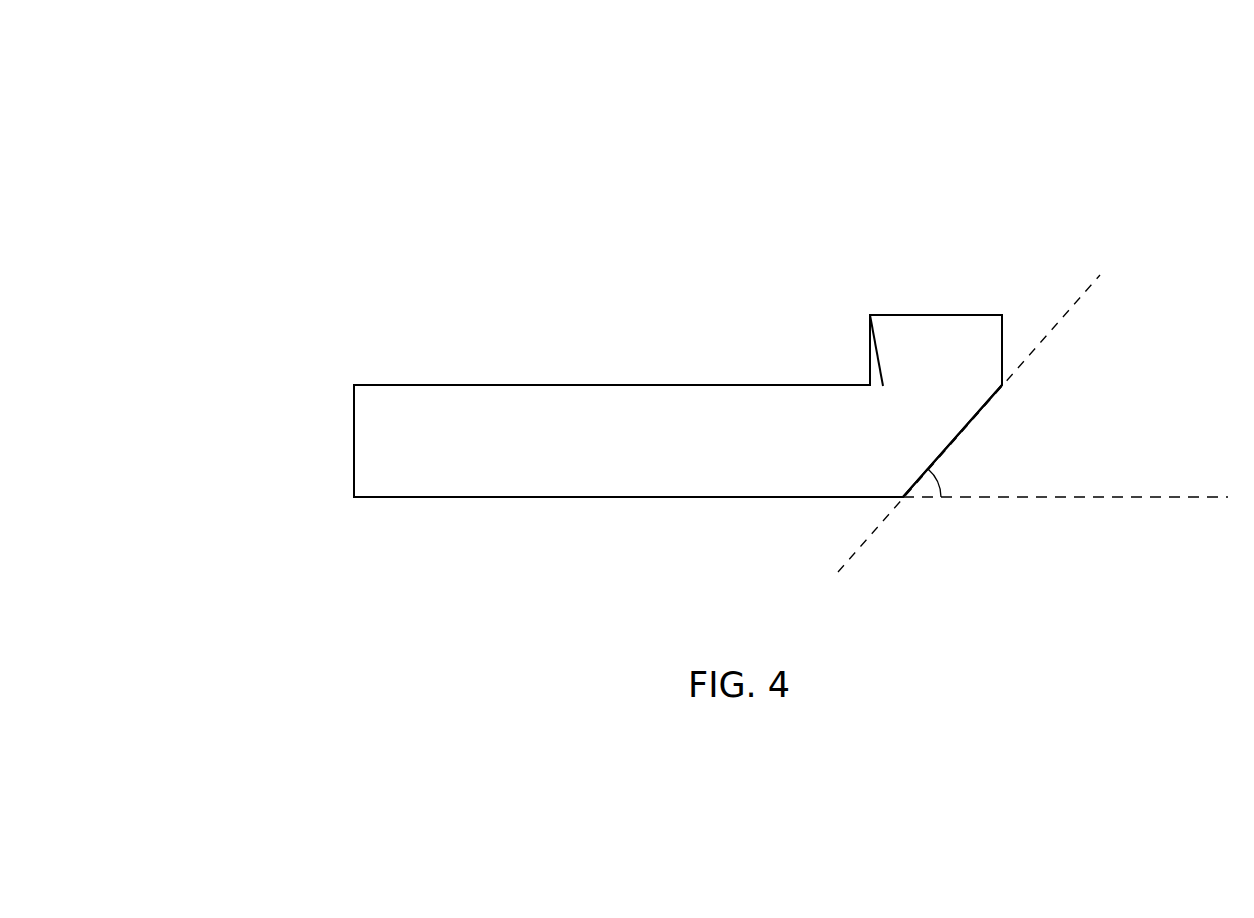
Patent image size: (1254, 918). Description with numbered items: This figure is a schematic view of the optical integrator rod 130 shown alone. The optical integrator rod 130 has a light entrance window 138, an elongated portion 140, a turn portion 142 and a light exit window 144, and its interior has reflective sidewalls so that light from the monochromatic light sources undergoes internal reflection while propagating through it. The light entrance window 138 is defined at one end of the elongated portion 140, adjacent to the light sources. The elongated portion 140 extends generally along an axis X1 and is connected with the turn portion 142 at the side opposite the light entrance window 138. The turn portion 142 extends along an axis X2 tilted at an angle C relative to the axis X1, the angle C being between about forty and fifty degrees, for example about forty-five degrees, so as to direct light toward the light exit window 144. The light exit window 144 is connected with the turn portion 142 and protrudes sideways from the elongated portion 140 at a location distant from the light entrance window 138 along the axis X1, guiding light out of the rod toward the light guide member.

The optical integrator rod 130 is at (265, 72).
The light entrance window 138 is at (354, 448).
The elongated portion 140 is at (690, 497).
The turn portion 142 is at (976, 418).
The light exit window 144 is at (877, 352).
The axis X1 is at (1150, 498).
The axis X2 is at (1087, 292).
The angle C is at (941, 478).